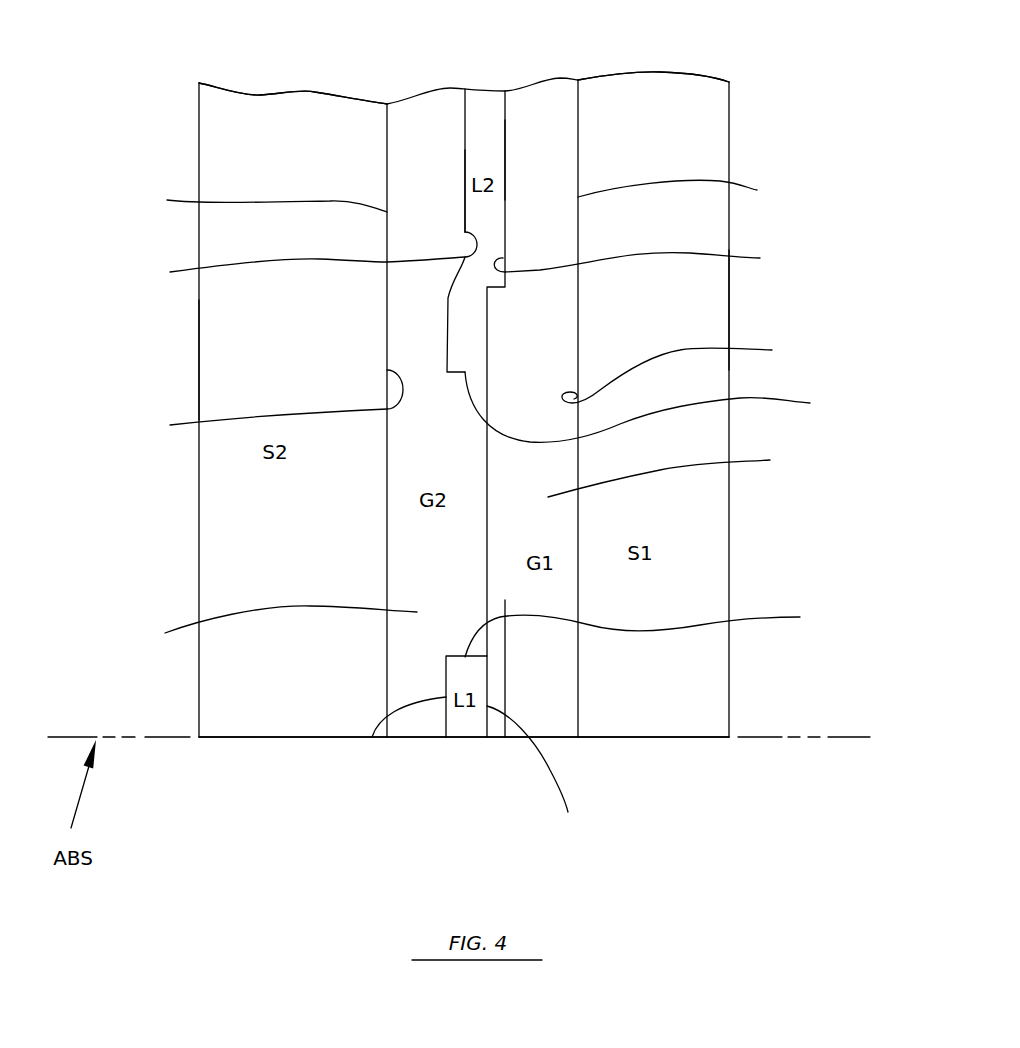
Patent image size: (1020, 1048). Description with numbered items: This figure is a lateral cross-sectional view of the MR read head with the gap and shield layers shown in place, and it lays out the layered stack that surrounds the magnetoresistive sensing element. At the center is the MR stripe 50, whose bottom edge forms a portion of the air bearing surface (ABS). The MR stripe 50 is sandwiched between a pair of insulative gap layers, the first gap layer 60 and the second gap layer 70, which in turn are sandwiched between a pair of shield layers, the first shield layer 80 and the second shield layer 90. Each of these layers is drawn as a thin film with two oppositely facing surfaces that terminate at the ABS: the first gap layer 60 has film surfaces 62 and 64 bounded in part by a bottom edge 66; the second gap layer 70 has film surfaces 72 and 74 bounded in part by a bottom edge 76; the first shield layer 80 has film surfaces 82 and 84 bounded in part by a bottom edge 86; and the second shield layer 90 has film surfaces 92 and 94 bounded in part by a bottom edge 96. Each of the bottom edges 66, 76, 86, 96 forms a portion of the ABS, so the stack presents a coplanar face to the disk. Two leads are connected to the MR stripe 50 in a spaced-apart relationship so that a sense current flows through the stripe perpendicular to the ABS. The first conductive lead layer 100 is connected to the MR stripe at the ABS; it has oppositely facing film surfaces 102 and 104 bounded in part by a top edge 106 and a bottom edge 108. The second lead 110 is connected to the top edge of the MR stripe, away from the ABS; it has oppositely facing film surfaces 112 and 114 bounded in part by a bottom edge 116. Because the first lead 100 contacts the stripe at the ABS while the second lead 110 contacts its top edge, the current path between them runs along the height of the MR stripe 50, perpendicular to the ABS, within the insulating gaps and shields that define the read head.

The MR stripe 50 is at (535, 696).
The first gap layer G1 60 is at (679, 474).
The film surface of first gap layer 62 is at (685, 193).
The film surface of first gap layer 64 is at (645, 259).
The bottom edge of first gap layer 66 is at (563, 737).
The second gap layer G2 70 is at (272, 629).
The film surface of second gap layer 72 is at (258, 203).
The film surface of second gap layer 74 is at (303, 302).
The bottom edge of second gap layer 76 is at (423, 737).
The first shield layer S1 80 is at (690, 115).
The film surface of first shield layer 82 is at (729, 308).
The film surface of first shield layer 84 is at (682, 372).
The bottom edge of first shield layer 86 is at (637, 737).
The second shield layer S2 90 is at (237, 124).
The film surface of second shield layer 92 is at (199, 362).
The film surface of second shield layer 94 is at (268, 402).
The bottom edge of second shield layer 96 is at (283, 737).
The first conductive lead layer L1 100 is at (472, 737).
The film surface of first lead layer 102 is at (537, 775).
The film surface of first lead layer 104 is at (375, 737).
The top edge of first lead layer 106 is at (658, 629).
The bottom edge of first lead layer 108 is at (478, 737).
The second lead L2 110 is at (483, 125).
The film surface of second lead 112 is at (505, 160).
The film surface of second lead 114 is at (465, 205).
The bottom edge of second lead 116 is at (663, 407).